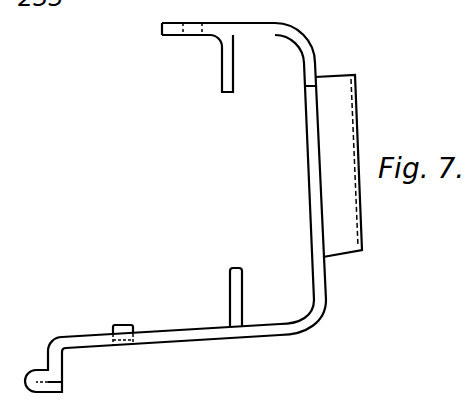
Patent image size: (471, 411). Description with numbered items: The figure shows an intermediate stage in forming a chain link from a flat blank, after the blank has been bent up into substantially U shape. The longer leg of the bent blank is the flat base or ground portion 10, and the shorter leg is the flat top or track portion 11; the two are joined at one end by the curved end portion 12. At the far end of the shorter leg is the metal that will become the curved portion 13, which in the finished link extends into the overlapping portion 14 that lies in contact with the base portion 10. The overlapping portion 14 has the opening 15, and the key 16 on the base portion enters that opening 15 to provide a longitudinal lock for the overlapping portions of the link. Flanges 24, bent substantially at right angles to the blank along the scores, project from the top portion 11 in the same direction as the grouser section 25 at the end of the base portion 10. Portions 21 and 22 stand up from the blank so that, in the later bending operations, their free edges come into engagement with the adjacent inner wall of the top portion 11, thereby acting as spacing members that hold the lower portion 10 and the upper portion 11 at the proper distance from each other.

The base or ground portion 10 is at (197, 341).
The top or track portion 11 is at (308, 183).
The curved end portion 12 is at (317, 318).
The curved portion 13 is at (297, 28).
The overlapping portion 14 is at (172, 35).
The opening 15 is at (197, 23).
The key 16 is at (130, 325).
The spacing portion 21 is at (230, 289).
The spacing portion 22 is at (222, 68).
The flanges 24 is at (350, 124).
The grouser section 25 is at (65, 367).